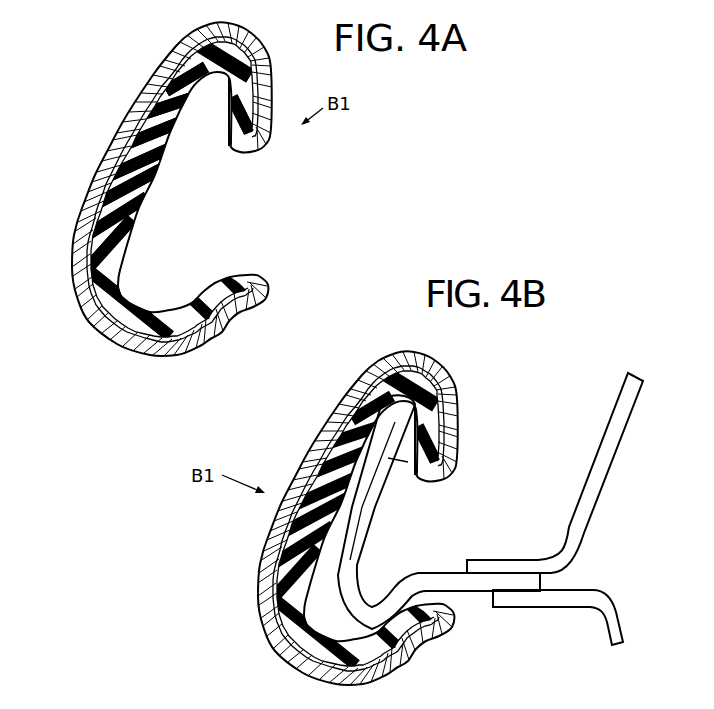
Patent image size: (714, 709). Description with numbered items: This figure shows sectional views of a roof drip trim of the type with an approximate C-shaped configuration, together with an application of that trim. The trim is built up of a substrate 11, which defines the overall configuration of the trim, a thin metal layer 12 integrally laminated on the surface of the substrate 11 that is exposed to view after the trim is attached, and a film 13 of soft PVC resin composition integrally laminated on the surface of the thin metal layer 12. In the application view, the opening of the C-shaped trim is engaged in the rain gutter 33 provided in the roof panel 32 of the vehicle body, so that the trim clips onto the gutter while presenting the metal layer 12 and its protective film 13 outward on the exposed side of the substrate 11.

In FIG. 4A, the substrate 11 is at (147, 165).
In FIG. 4A, the thin metal layer 12 is at (90, 194).
In FIG. 4A, the film of soft PVC resin composition 13 is at (268, 68).
In FIG. 4B, the roof panel 32 is at (620, 410).
In FIG. 4B, the rain gutter 33 is at (360, 530).